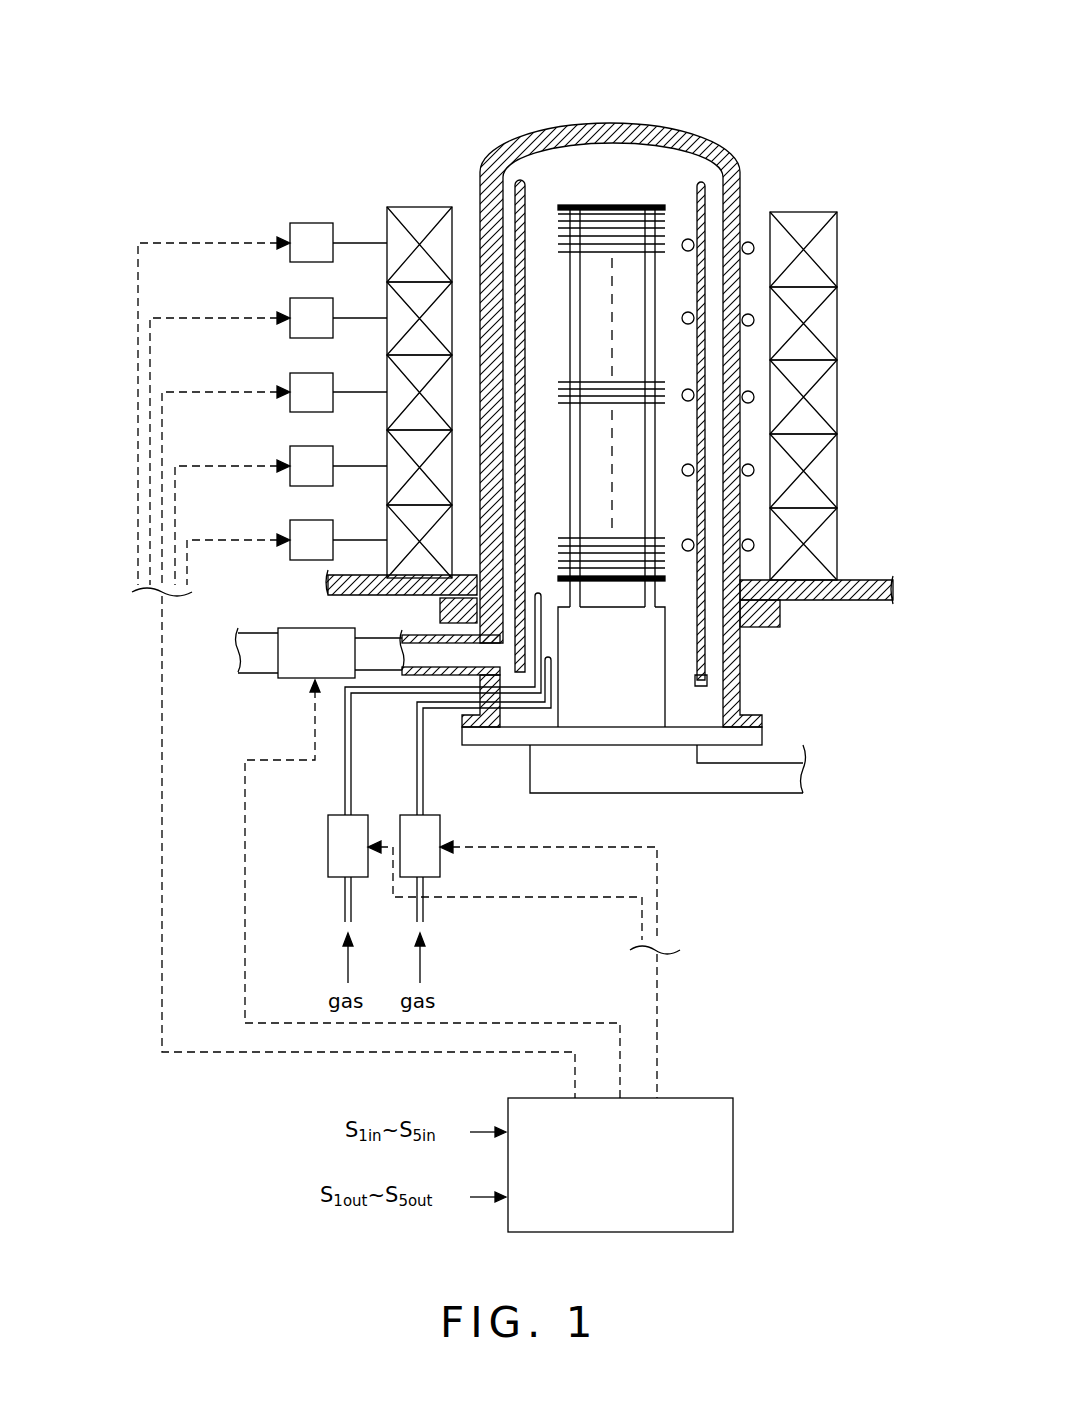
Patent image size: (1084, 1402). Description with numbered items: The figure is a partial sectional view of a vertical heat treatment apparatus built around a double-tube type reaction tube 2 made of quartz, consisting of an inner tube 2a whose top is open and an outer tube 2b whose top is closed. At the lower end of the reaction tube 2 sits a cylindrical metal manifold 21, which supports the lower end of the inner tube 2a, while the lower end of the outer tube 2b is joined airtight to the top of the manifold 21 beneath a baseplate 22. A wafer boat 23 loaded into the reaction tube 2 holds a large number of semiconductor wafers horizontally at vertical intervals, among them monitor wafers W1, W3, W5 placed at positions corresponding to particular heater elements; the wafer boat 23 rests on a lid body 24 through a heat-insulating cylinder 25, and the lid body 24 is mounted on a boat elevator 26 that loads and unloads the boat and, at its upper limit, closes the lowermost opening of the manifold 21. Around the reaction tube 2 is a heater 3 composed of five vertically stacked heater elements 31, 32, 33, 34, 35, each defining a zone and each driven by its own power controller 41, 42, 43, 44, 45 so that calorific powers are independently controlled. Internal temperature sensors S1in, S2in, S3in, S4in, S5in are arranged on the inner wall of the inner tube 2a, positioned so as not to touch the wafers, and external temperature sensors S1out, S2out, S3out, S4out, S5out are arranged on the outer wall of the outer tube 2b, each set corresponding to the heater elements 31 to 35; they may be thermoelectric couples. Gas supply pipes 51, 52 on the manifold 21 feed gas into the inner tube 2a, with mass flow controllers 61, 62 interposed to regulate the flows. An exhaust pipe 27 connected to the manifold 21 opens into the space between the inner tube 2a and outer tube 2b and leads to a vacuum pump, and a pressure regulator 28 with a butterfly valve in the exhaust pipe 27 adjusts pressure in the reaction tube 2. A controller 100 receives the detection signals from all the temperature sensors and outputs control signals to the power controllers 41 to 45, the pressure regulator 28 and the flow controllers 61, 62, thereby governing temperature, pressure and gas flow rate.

The reaction tube 2 is at (622, 98).
The inner tube 2a is at (701, 180).
The outer tube 2b is at (734, 176).
The heater 3 is at (400, 110).
The manifold 21 is at (742, 692).
The baseplate 22 is at (858, 602).
The wafer boat 23 is at (694, 272).
The lid body 24 is at (580, 745).
The heat-insulating cylinder 25 is at (666, 645).
The boat elevator 26 is at (678, 780).
The exhaust pipe 27 is at (400, 636).
The pressure regulator 28 is at (290, 628).
The heater element 31 is at (386, 222).
The heater element 32 is at (386, 298).
The heater element 33 is at (386, 372).
The heater element 34 is at (386, 448).
The heater element 35 is at (386, 515).
The power controller 41 is at (290, 232).
The power controller 42 is at (290, 307).
The power controller 43 is at (290, 382).
The power controller 44 is at (290, 455).
The power controller 45 is at (290, 522).
The gas supply pipe 51 is at (345, 792).
The gas supply pipe 52 is at (423, 780).
The mass flow controller 61 is at (327, 847).
The mass flow controller 62 is at (441, 867).
The controller 100 is at (703, 1096).
The monitor wafer W1 is at (552, 243).
The monitor wafer W3 is at (552, 388).
The monitor wafer W5 is at (562, 540).
The internal temperature sensor S1in is at (684, 240).
The internal temperature sensor S2in is at (684, 314).
The internal temperature sensor S3in is at (684, 390).
The internal temperature sensor S4in is at (684, 465).
The internal temperature sensor S5in is at (684, 540).
The external temperature sensor S1out is at (752, 240).
The external temperature sensor S2out is at (754, 320).
The external temperature sensor S3out is at (754, 398).
The external temperature sensor S4out is at (754, 471).
The external temperature sensor S5out is at (754, 546).